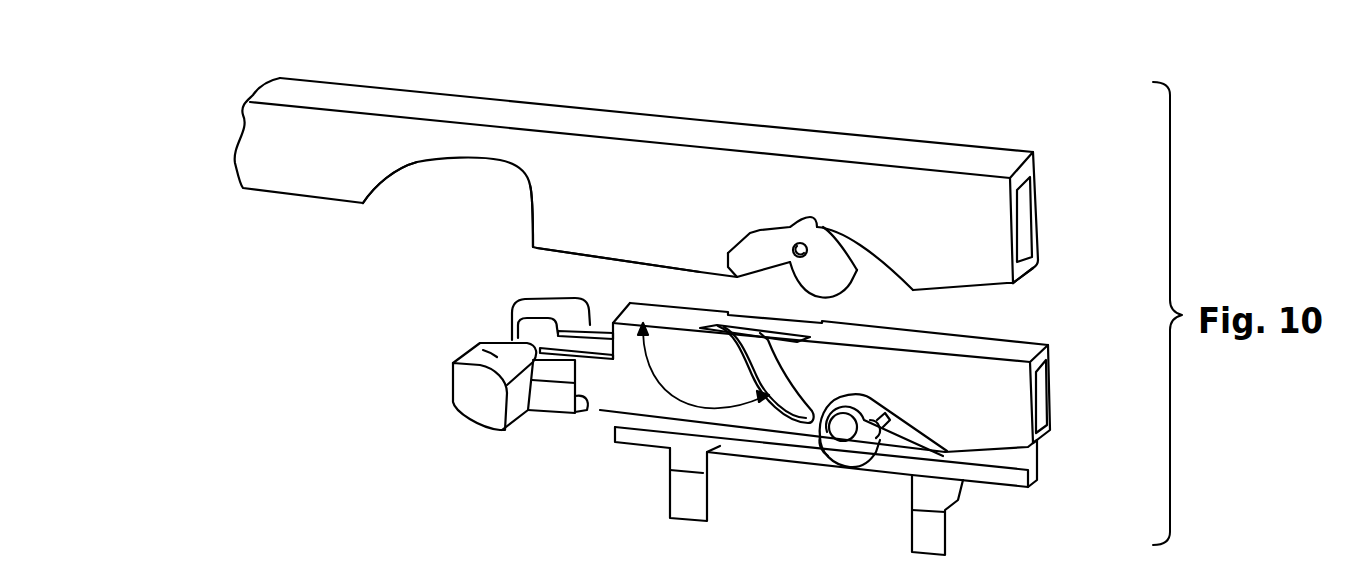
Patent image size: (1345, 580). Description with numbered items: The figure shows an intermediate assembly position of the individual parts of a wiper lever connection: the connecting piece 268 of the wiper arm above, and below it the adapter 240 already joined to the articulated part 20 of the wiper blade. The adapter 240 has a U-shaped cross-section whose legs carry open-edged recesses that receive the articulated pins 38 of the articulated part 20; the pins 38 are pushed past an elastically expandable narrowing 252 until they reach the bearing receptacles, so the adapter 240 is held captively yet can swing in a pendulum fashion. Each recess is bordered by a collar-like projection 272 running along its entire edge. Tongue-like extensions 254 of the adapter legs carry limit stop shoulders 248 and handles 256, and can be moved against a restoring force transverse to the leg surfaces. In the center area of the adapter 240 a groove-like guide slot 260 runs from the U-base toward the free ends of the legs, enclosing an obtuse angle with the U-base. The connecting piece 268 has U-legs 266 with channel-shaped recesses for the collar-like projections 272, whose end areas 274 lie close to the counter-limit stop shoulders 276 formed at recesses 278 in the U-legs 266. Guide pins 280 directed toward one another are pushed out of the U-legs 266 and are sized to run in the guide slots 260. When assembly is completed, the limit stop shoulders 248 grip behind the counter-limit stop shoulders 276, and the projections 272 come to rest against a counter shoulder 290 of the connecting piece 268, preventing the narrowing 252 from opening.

The connecting piece 268 is at (233, 86).
The recesses 278 is at (435, 188).
The counter-limit stop shoulders 276 is at (528, 213).
The U-legs 266 is at (570, 237).
The guide pins 280 is at (783, 248).
The counter shoulder 290 is at (862, 267).
The adapter 240 is at (400, 380).
The articulated part 20 is at (642, 458).
The tongue-like extensions 254 is at (593, 340).
The handles 256 is at (527, 302).
The limit stop shoulders 248 is at (587, 412).
The guide slot 260 is at (780, 397).
The narrowing 252 is at (862, 463).
The articulated pin 38 is at (847, 430).
The collar-like projections 272 is at (820, 437).
The end areas 274 is at (807, 576).